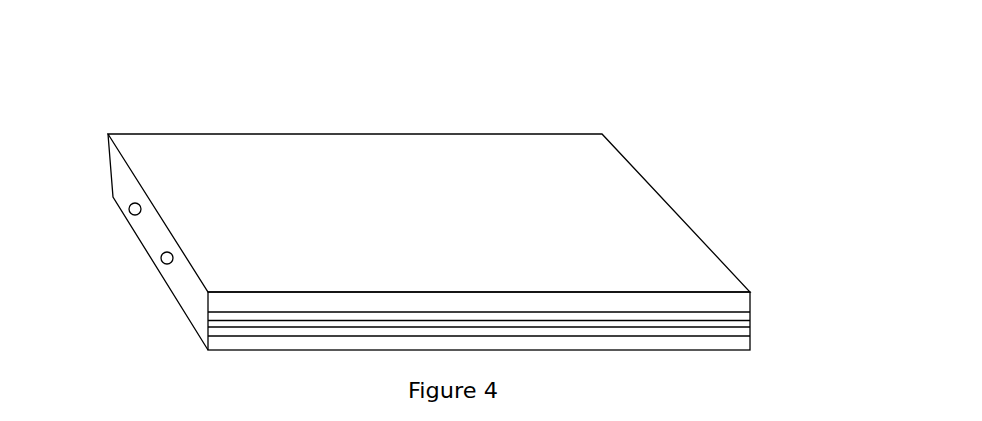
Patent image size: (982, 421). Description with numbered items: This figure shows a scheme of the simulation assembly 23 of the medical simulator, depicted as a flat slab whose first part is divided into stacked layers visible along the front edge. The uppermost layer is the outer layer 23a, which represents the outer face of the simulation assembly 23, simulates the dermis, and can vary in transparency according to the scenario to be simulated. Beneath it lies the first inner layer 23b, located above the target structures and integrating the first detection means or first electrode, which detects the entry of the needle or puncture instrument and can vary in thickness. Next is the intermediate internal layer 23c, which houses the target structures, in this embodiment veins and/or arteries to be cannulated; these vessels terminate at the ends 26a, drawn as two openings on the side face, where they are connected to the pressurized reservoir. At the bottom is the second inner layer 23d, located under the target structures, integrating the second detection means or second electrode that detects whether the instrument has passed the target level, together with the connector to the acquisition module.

The simulation assembly 23 is at (357, 147).
The outer layer 23a is at (748, 302).
The first inner layer 23b is at (742, 320).
The intermediate internal layer 23c is at (210, 325).
The second inner layer 23d is at (742, 333).
The ends of the target structures 26a is at (148, 252).